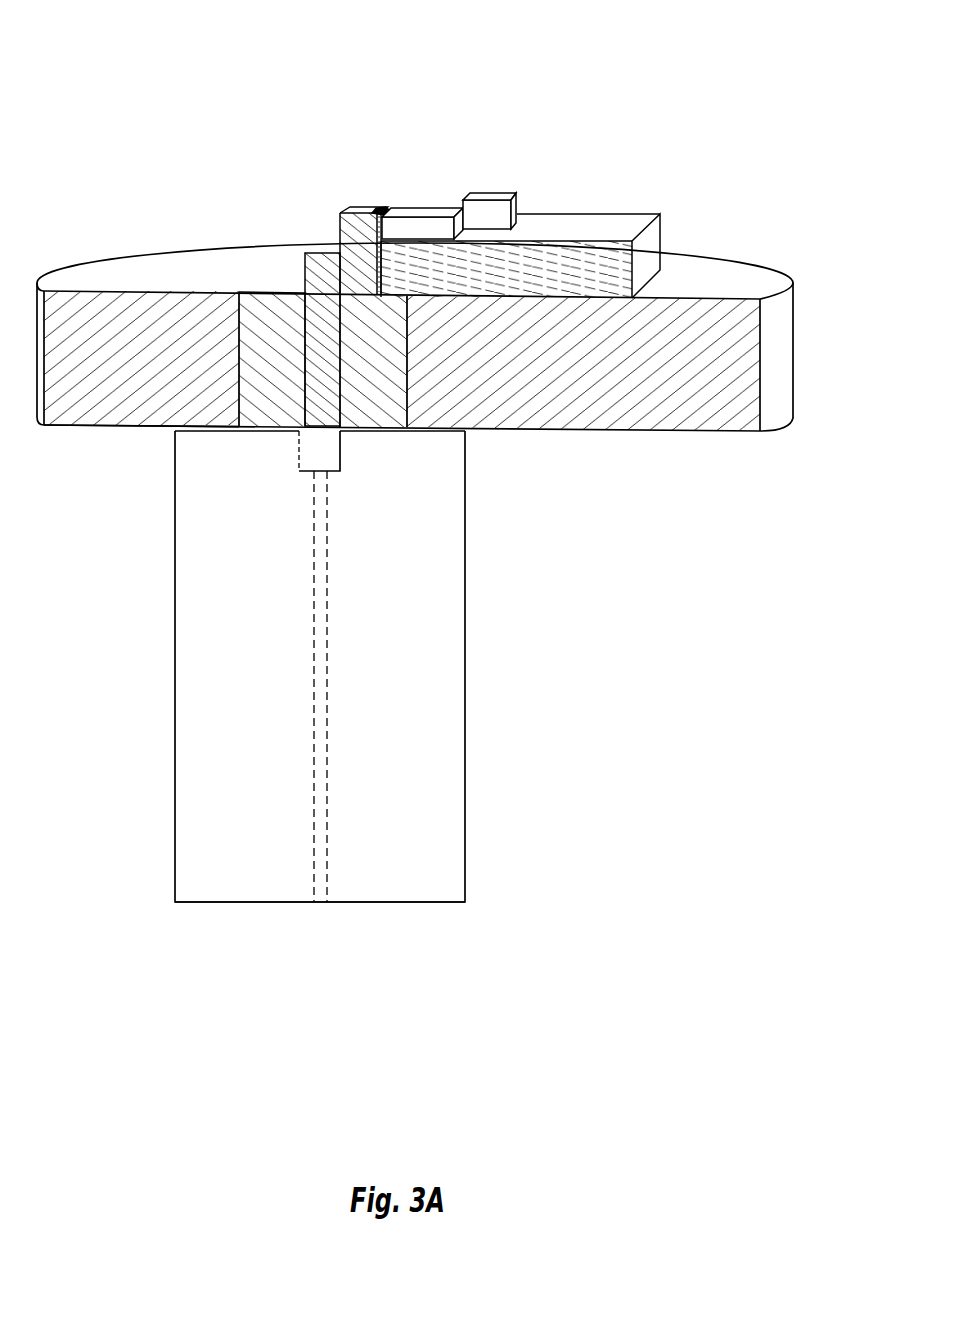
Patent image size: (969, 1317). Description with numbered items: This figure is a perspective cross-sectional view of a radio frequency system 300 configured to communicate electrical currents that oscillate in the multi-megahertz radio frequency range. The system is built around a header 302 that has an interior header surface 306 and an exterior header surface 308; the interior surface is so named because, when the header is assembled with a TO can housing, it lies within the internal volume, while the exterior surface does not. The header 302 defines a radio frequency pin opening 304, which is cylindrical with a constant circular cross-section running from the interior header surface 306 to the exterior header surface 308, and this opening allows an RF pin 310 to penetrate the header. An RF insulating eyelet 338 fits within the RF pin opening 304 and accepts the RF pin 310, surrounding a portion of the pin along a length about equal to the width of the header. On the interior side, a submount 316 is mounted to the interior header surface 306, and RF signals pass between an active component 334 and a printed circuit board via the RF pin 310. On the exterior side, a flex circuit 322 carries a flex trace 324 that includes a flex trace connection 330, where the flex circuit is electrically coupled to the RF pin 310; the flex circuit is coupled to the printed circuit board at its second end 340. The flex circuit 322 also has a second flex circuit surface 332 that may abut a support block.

The radio frequency system 300 is at (124, 63).
The header 302 is at (742, 401).
The radio frequency pin opening 304 is at (408, 397).
The interior header surface 306 is at (738, 278).
The exterior header surface 308 is at (100, 427).
The RF pin 310 is at (305, 262).
The submount 316 is at (353, 225).
The flex circuit 322 is at (466, 760).
The flex trace 324 is at (327, 640).
The flex trace connection 330 is at (327, 461).
The second flex circuit surface 332 is at (396, 804).
The active component 334 is at (417, 208).
The RF insulating eyelet 338 is at (262, 308).
The second end 340 is at (438, 912).